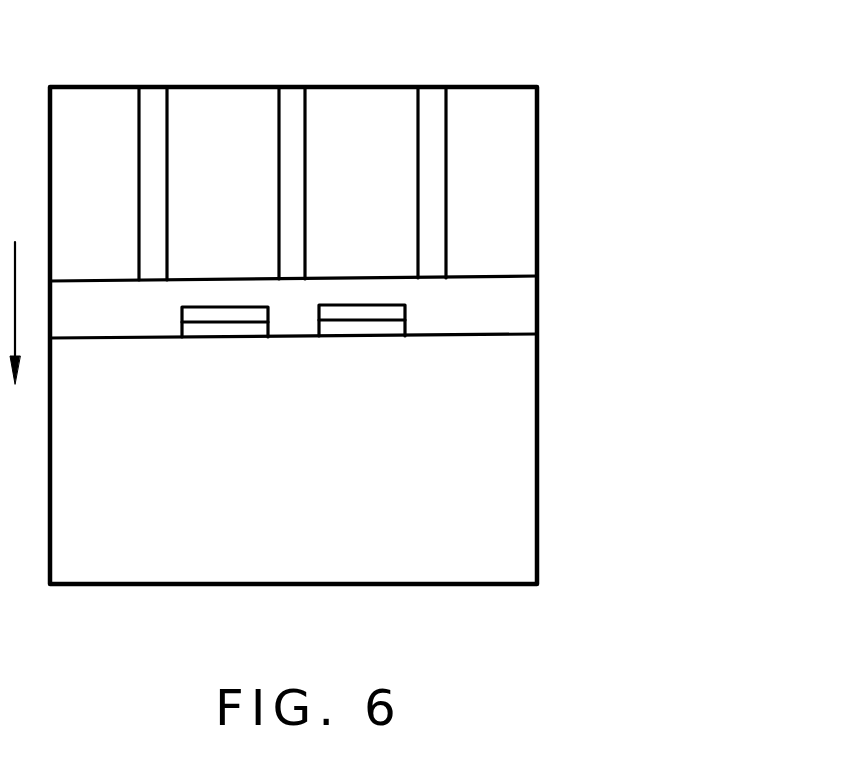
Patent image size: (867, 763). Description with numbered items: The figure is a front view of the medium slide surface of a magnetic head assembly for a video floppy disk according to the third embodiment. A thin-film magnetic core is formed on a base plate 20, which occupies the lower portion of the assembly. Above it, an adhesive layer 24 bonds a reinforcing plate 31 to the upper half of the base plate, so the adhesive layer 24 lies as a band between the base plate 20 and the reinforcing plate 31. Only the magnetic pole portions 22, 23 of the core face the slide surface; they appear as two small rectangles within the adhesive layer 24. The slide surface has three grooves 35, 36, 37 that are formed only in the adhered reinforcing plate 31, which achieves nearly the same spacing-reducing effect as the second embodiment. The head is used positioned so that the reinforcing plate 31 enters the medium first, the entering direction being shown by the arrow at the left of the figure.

The base plate 20 is at (521, 425).
The magnetic pole portion 22 is at (370, 312).
The magnetic pole portion 23 is at (237, 313).
The adhesive layer 24 is at (521, 304).
The reinforcing plate 31 is at (521, 184).
The groove 35 is at (281, 110).
The groove 36 is at (445, 110).
The groove 37 is at (140, 110).